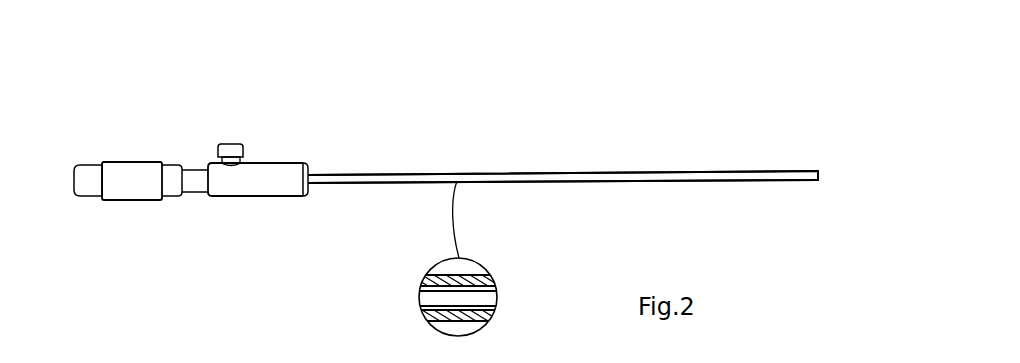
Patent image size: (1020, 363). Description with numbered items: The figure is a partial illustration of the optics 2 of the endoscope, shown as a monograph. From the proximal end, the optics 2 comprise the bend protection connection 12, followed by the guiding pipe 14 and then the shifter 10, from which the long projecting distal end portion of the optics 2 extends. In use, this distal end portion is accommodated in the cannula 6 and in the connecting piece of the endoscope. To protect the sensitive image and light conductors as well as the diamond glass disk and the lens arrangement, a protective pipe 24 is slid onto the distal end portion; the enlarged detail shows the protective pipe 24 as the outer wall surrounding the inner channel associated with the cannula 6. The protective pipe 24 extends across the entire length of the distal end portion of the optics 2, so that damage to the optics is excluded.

The optics 2 is at (386, 156).
The cannula 6 is at (488, 299).
The shifter 10 is at (277, 162).
The bend protection connection 12 is at (135, 160).
The guiding pipe 14 is at (192, 168).
The protective pipe 24 is at (518, 173).